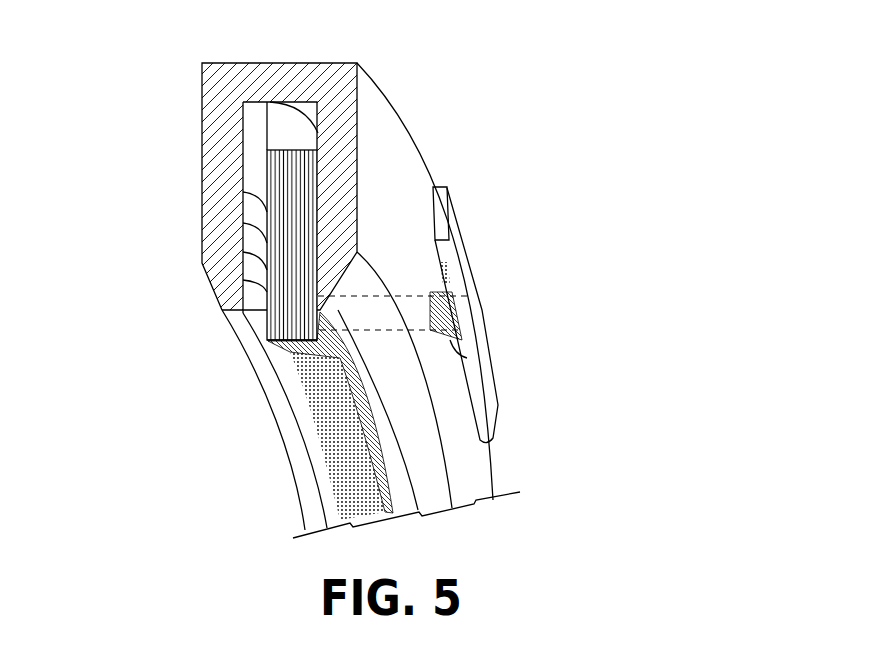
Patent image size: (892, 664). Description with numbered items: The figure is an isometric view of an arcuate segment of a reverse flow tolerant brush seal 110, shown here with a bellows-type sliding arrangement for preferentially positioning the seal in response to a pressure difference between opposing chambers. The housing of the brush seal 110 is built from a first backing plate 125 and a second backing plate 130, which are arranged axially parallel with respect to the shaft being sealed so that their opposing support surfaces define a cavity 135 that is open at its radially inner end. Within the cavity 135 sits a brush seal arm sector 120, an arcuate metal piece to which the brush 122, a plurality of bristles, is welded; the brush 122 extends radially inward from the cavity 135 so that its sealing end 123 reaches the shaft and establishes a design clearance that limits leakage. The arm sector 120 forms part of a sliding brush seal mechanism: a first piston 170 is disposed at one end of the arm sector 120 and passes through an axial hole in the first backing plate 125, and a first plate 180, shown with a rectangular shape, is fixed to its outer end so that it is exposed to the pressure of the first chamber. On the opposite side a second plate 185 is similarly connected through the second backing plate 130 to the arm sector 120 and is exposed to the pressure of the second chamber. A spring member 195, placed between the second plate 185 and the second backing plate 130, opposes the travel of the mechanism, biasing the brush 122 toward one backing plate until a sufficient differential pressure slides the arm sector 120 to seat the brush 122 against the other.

The reverse flow tolerant brush seal 110 is at (107, 127).
The brush seal arm sector 120 is at (292, 125).
The brush 122 is at (292, 167).
The sealing end 123 is at (247, 318).
The first backing plate 125 is at (348, 135).
The second backing plate 130 is at (225, 203).
The cavity 135 is at (245, 264).
The first piston 170 is at (440, 263).
The first plate 180 is at (472, 296).
The second plate 185 is at (262, 279).
The spring member 195 is at (465, 358).